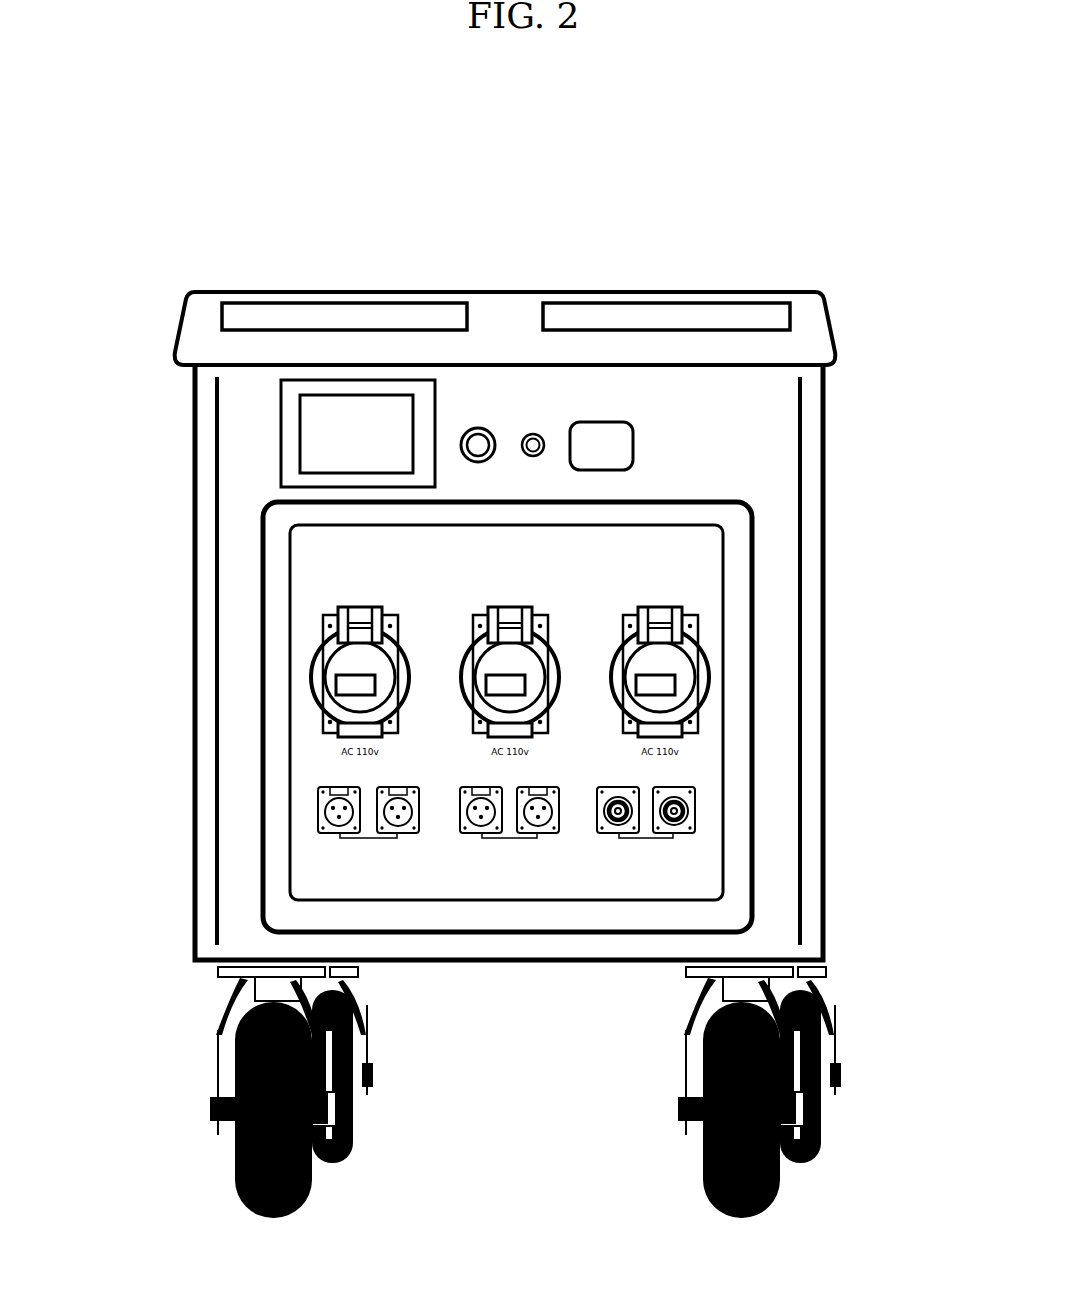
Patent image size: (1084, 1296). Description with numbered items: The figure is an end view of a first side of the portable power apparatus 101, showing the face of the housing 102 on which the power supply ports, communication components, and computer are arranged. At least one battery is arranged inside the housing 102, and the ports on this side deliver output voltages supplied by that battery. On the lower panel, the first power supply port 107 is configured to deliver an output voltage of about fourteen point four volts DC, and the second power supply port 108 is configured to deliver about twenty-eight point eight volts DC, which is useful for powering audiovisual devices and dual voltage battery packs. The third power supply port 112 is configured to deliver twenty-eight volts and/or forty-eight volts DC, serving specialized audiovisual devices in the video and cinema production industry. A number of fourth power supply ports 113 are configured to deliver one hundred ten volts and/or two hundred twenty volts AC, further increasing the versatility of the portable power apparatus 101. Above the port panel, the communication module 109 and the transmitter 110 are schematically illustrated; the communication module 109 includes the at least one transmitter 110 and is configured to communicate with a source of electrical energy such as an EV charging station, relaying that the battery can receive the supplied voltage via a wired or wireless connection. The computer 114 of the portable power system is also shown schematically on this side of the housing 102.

The portable power apparatus 101 is at (155, 295).
The housing 102 is at (193, 568).
The first power supply port 107 is at (386, 868).
The second power supply port 108 is at (499, 872).
The communication module 109 is at (480, 444).
The transmitter 110 is at (602, 425).
The third power supply port 112 is at (696, 854).
The fourth power supply port 113 is at (706, 712).
The computer 114 is at (350, 402).